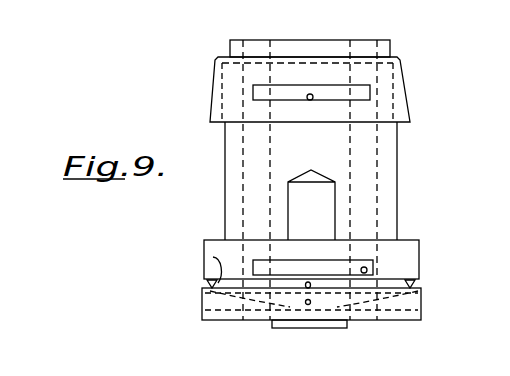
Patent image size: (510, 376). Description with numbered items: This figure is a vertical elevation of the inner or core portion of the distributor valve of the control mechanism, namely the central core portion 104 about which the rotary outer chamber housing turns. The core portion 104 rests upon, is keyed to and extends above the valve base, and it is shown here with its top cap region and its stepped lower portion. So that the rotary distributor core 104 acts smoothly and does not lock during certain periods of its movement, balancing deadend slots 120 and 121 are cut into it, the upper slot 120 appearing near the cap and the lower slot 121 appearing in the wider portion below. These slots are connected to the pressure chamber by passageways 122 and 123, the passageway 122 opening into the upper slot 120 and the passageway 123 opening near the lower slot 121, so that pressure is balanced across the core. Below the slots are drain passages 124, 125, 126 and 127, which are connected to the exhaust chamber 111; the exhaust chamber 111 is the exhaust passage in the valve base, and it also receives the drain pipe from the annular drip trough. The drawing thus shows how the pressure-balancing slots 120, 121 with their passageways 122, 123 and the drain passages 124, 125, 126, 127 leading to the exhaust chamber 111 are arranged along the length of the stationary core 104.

The rotary distributor core 104 is at (232, 196).
The balancing deadend slot 120 is at (278, 92).
The passageway 122 is at (310, 100).
The exhaust chamber 111 is at (333, 192).
The drain passage 125 is at (307, 283).
The balancing deadend slot 121 is at (255, 267).
The passageway 123 is at (366, 266).
The drain passage 124 is at (310, 300).
The drain passage 126 is at (213, 257).
The drain passage 127 is at (205, 311).